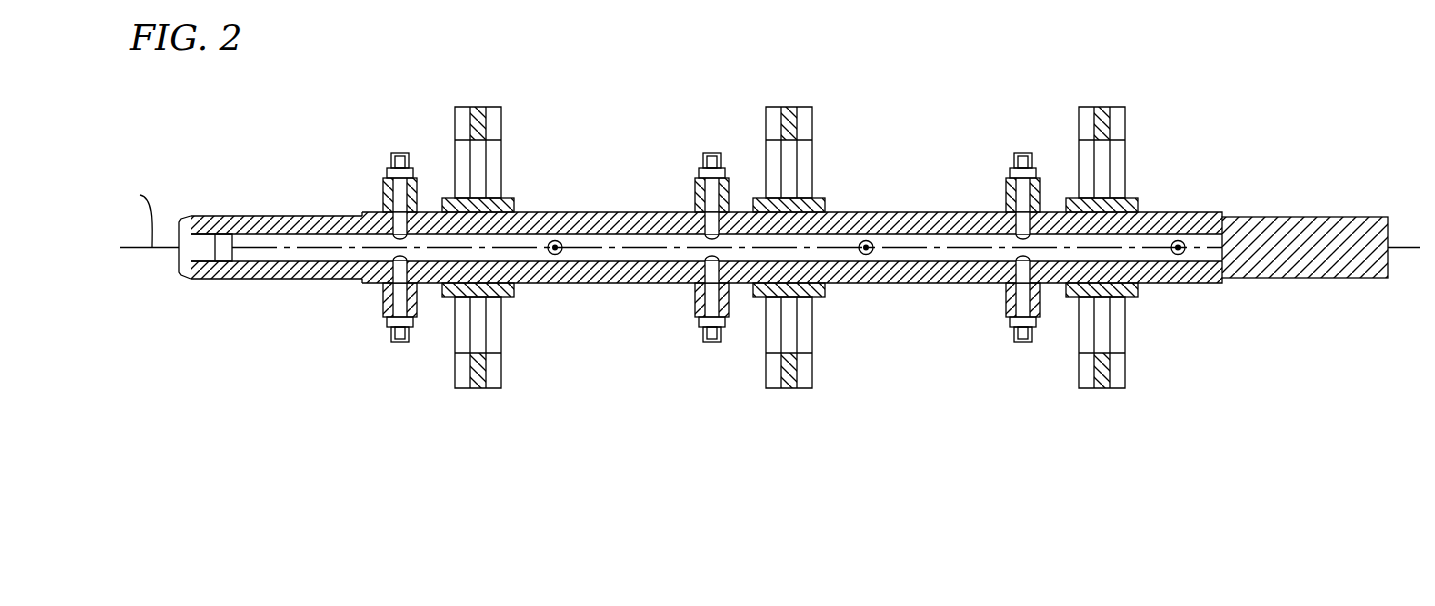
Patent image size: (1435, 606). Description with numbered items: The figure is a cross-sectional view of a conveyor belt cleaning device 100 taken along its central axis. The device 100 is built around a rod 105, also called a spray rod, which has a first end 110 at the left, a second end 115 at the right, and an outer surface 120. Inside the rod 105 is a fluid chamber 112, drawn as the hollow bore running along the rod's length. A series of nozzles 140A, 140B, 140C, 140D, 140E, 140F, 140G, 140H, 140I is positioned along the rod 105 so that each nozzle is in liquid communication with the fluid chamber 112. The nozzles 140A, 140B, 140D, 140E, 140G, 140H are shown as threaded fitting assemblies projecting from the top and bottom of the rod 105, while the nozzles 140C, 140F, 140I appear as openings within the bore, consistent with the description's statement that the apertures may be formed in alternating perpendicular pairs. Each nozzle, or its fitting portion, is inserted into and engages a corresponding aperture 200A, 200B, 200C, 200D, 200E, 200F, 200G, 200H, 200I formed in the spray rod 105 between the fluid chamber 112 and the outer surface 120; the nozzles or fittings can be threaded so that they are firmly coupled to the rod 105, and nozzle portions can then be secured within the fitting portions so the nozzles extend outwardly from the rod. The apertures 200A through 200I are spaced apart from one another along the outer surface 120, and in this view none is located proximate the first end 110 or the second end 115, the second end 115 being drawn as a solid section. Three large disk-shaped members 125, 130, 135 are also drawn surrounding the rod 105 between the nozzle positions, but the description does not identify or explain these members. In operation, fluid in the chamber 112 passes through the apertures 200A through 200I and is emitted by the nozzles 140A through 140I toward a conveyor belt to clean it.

The conveyor belt cleaning device 100 is at (738, 100).
The rod 105 is at (845, 212).
The first end 110 is at (222, 216).
The fluid chamber 112 is at (328, 270).
The second end 115 is at (1328, 217).
The outer surface 120 is at (245, 216).
The first disk 125 is at (481, 390).
The second disk 130 is at (793, 390).
The third disk 135 is at (1103, 390).
The nozzle 140A is at (403, 152).
The nozzle 140B is at (400, 343).
The nozzle 140C is at (550, 240).
The nozzle 140D is at (711, 152).
The nozzle 140E is at (712, 343).
The nozzle 140F is at (866, 240).
The nozzle 140G is at (1023, 152).
The nozzle 140H is at (1023, 343).
The nozzle 140I is at (1178, 240).
The aperture 200A is at (386, 218).
The aperture 200B is at (333, 252).
The aperture 200C is at (564, 251).
The aperture 200D is at (702, 222).
The aperture 200E is at (702, 272).
The aperture 200F is at (876, 249).
The aperture 200G is at (1036, 219).
The aperture 200H is at (1036, 272).
The aperture 200I is at (1189, 252).